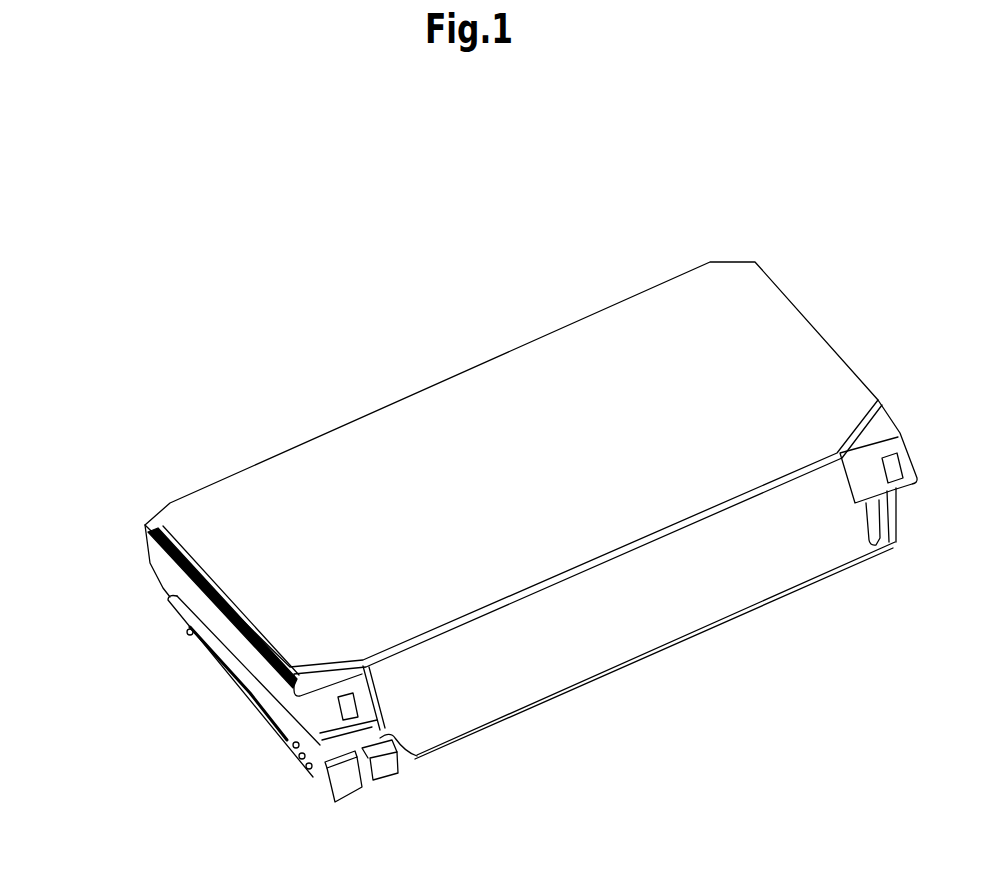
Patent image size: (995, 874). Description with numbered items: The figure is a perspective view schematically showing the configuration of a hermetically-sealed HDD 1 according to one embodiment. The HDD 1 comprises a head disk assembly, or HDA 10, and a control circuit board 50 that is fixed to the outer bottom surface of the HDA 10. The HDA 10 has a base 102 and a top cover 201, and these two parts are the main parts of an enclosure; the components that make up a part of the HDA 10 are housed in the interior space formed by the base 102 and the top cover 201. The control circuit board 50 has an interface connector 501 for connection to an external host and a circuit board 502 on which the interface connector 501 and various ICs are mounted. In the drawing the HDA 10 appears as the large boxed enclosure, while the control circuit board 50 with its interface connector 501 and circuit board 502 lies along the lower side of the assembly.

The hermetically-sealed HDD 1 is at (293, 250).
The head disk assembly 10 is at (360, 397).
The base 102 is at (728, 580).
The top cover 201 is at (250, 567).
The control circuit board 50 is at (577, 722).
The interface connector 501 is at (348, 797).
The circuit board 502 is at (472, 733).